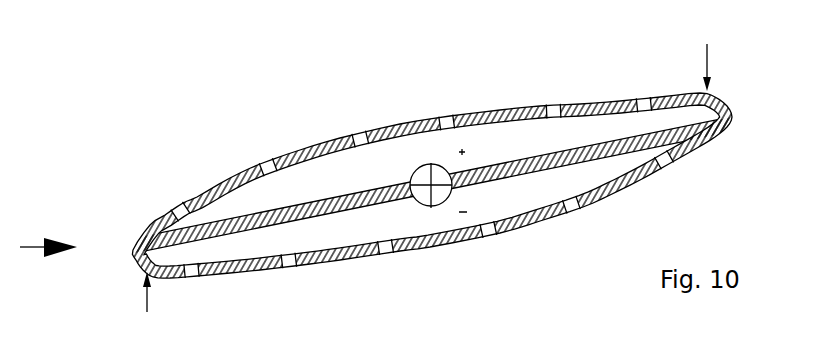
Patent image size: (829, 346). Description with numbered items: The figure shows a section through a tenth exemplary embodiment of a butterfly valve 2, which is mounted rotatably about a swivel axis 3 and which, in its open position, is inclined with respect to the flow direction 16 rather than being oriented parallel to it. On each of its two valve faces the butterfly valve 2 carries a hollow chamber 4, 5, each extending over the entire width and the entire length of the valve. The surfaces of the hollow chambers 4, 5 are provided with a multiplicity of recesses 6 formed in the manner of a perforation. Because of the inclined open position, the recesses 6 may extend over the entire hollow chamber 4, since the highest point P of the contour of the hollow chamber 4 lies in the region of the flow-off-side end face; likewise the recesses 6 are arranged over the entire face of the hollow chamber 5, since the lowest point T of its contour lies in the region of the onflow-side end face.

The butterfly valve 2 is at (504, 158).
The swivel axis 3 is at (419, 167).
The hollow chamber 4 is at (570, 134).
The hollow chamber 5 is at (572, 180).
The recesses 6 is at (266, 160).
The flow direction 16 is at (20, 247).
The highest point P is at (707, 54).
The lowest point T is at (146, 306).